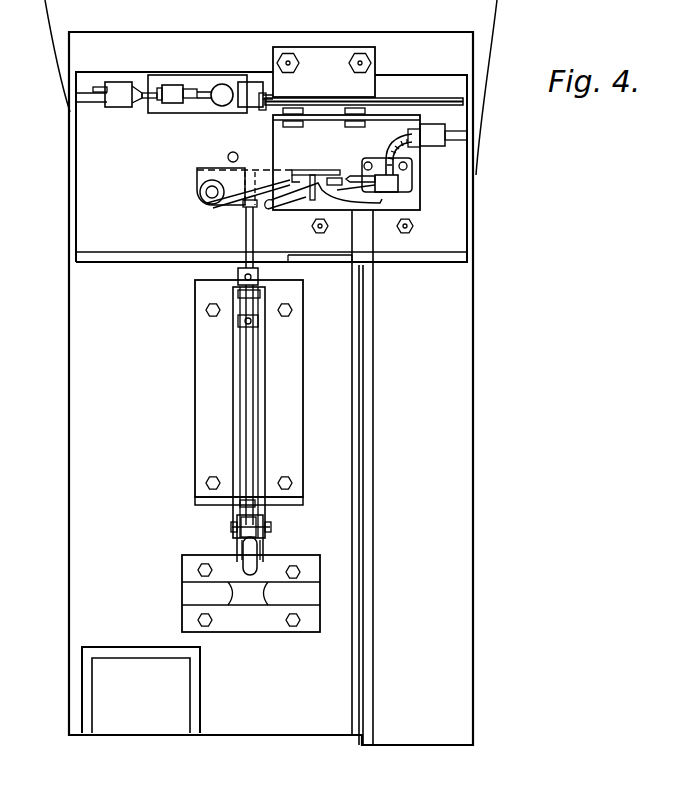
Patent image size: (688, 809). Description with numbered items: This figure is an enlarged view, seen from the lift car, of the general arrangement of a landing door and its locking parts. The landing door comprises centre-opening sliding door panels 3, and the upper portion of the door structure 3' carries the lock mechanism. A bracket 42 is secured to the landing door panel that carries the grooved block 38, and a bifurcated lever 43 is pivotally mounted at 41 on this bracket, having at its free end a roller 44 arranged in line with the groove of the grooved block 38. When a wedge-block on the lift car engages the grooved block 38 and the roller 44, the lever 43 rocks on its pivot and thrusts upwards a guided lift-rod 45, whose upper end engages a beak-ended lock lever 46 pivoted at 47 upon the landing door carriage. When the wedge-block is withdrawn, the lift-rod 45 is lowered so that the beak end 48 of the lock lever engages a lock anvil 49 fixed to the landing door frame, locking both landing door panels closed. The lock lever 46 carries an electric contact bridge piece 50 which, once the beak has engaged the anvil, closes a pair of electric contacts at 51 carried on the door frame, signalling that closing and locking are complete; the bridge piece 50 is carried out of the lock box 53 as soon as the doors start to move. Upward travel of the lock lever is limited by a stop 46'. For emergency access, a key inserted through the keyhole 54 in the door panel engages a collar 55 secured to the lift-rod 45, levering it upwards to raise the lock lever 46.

The landing door panel 3 is at (272, 388).
The upper door section 3' is at (269, 167).
The grooved block 38 is at (183, 573).
The pivot 41 is at (232, 527).
The bracket 42 is at (233, 444).
The bifurcated lever 43 is at (263, 556).
The roller 44 is at (243, 570).
The lift-rod 45 is at (246, 234).
The lock lever 46 is at (248, 204).
The stop 46' is at (214, 150).
The pivot 47 is at (200, 193).
The beak end 48 is at (334, 196).
The lock anvil 49 is at (318, 202).
The electric contact bridge piece 50 is at (343, 182).
The electric contacts 51 is at (378, 205).
The lock box 53 is at (420, 186).
The keyhole 54 is at (240, 330).
The collar 55 is at (258, 321).